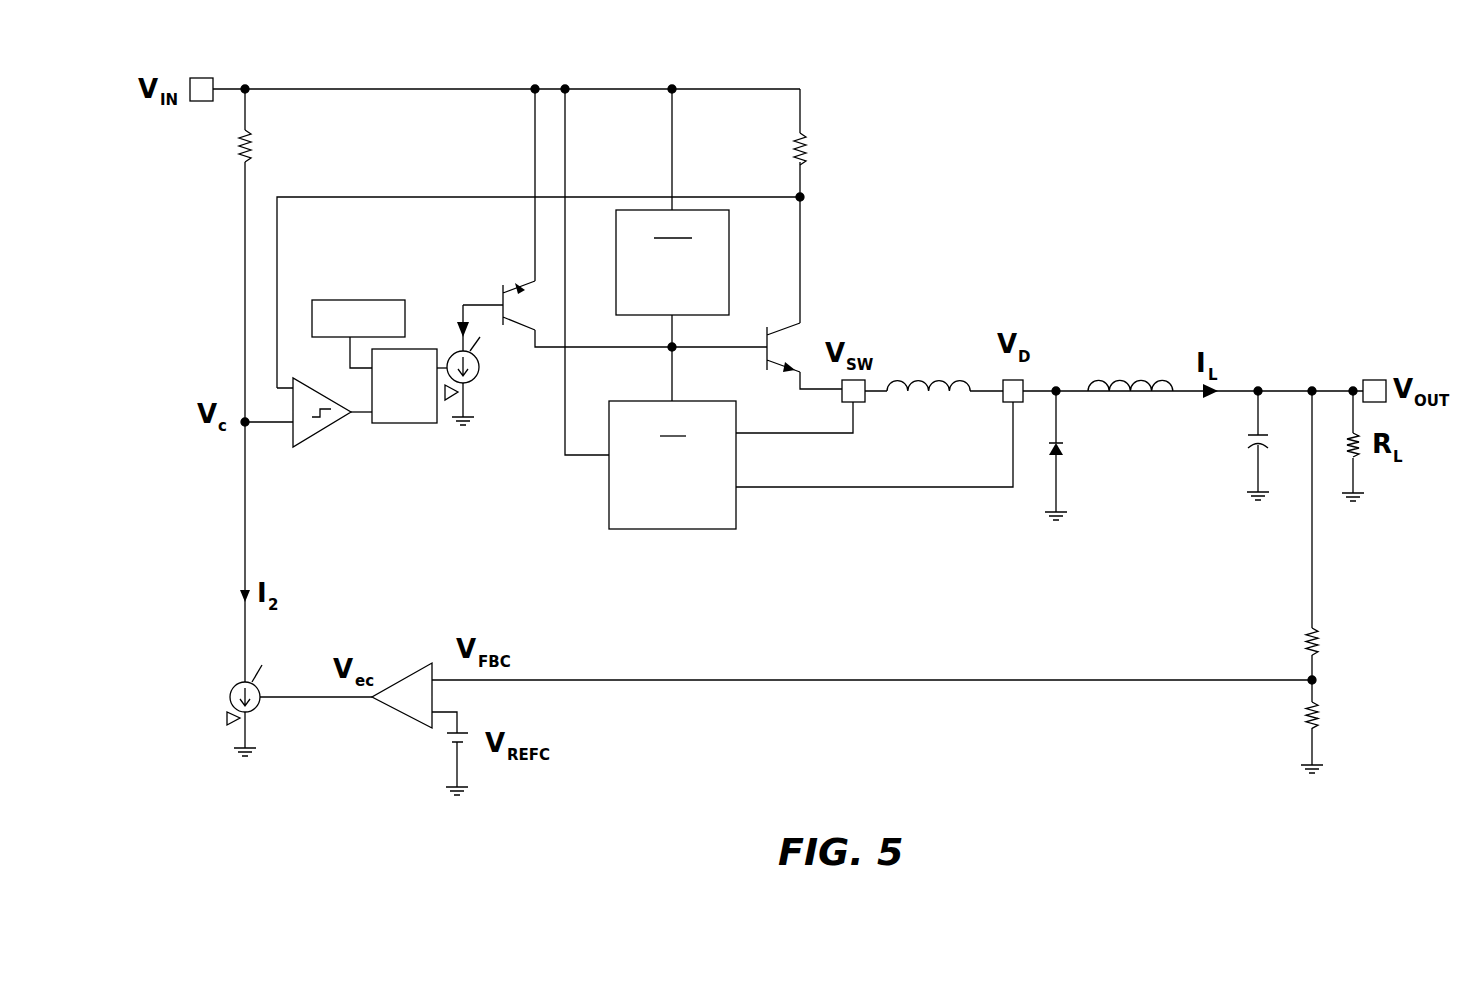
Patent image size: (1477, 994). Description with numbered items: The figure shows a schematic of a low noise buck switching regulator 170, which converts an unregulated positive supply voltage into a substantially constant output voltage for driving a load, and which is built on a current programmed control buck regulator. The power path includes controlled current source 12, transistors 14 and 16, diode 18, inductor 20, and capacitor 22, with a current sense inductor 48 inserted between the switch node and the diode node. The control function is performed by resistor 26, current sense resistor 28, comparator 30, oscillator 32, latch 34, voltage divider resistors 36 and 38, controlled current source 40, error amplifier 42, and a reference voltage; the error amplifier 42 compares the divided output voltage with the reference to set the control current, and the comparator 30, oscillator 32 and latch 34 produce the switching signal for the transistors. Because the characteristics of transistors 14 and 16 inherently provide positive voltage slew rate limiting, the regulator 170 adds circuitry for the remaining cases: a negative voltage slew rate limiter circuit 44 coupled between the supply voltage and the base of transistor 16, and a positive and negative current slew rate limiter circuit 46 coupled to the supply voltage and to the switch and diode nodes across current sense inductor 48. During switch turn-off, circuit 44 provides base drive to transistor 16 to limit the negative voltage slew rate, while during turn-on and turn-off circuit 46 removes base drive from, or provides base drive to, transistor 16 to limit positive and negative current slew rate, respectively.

The controlled current source 12 is at (480, 368).
The transistor 14 is at (501, 284).
The transistor 16 is at (796, 322).
The diode 18 is at (1063, 447).
The inductor 20 is at (1130, 378).
The capacitor 22 is at (1245, 435).
The resistor 26 is at (252, 138).
The current sense resistor 28 is at (807, 138).
The comparator 30 is at (317, 432).
The oscillator 32 is at (358, 300).
The latch 34 is at (405, 423).
The voltage divider resistor 36 is at (1317, 637).
The voltage divider resistor 38 is at (1317, 712).
The controlled current source 40 is at (232, 688).
The error amplifier 42 is at (392, 680).
The negative voltage slew rate limiter circuit 44 is at (729, 235).
The positive and negative current slew rate limiter circuit 46 is at (736, 447).
The current sense inductor 48 is at (910, 381).
The regulator 170 is at (1305, 256).